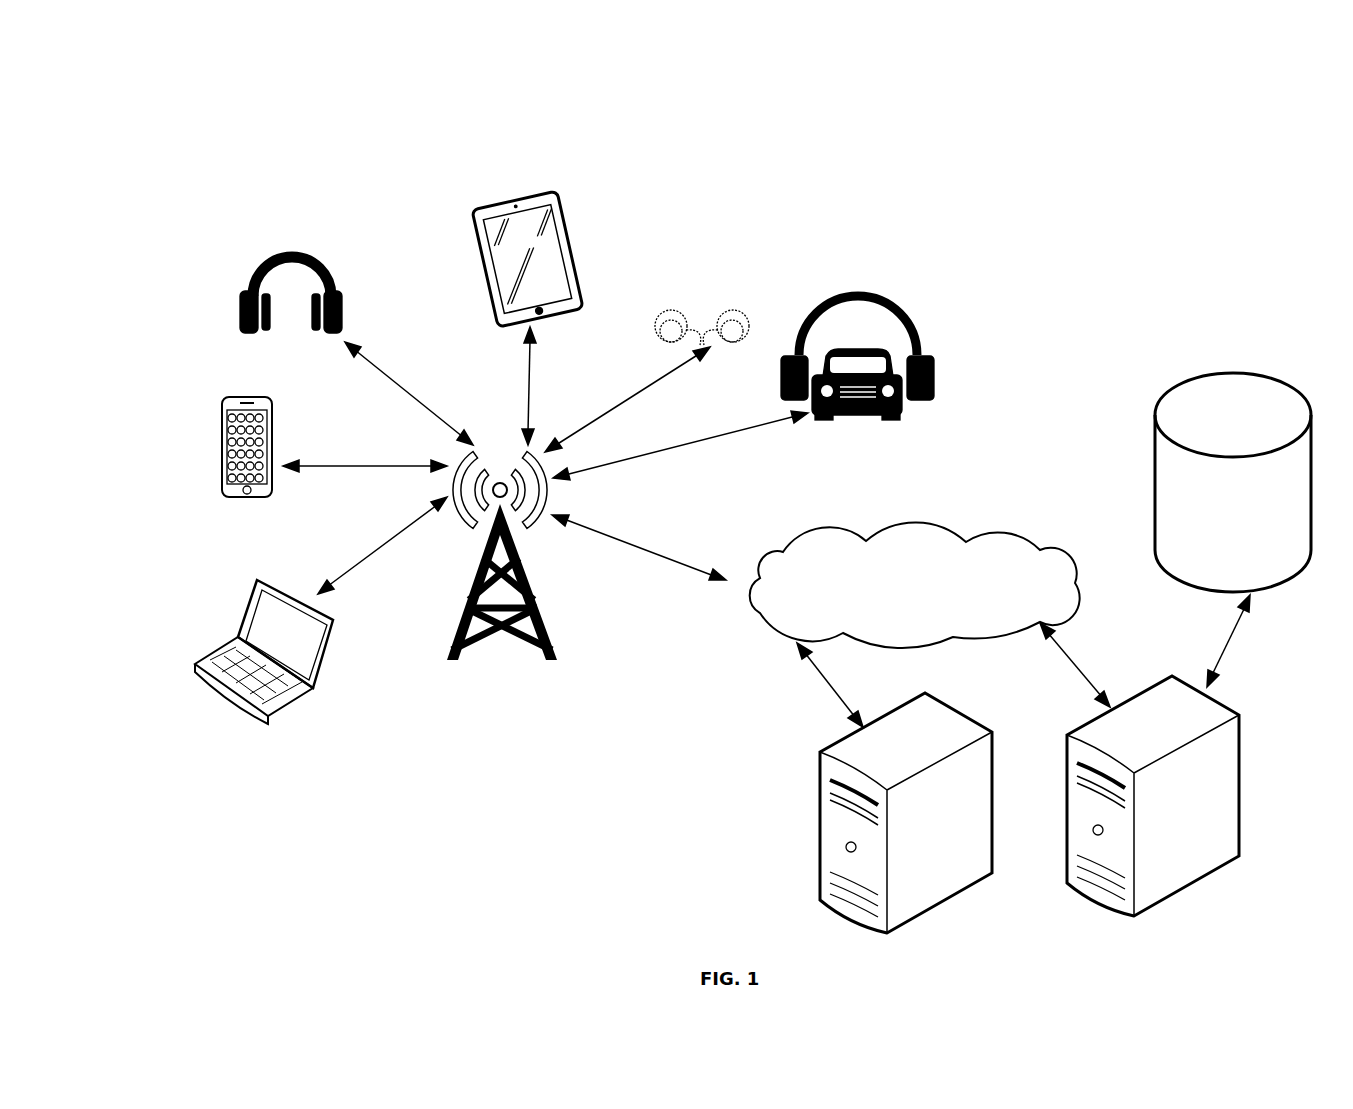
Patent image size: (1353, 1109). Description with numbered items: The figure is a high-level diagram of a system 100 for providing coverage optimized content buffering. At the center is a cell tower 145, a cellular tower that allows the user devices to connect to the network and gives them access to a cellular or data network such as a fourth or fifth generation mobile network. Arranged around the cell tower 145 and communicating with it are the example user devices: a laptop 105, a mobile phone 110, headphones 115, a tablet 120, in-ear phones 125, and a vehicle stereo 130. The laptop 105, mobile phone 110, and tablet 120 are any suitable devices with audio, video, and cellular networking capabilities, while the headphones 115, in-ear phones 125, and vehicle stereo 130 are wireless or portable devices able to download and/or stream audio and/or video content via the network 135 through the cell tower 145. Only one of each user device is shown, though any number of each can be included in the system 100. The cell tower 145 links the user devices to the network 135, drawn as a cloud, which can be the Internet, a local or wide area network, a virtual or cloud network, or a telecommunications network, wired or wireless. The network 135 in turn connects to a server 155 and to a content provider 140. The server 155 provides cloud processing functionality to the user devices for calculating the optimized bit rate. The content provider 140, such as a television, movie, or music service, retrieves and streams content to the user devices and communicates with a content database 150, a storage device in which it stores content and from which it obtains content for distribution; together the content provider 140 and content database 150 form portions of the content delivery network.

The system 100 is at (137, 82).
The laptop 105 is at (278, 585).
The mobile phone 110 is at (242, 396).
The headphones 115 is at (290, 252).
The tablet 120 is at (504, 196).
The in-ear phones 125 is at (734, 302).
The vehicle stereo 130 is at (868, 293).
The network 135 is at (915, 585).
The content provider 140 is at (1168, 897).
The cell tower 145 is at (449, 648).
The content database 150 is at (1233, 482).
The server 155 is at (918, 913).